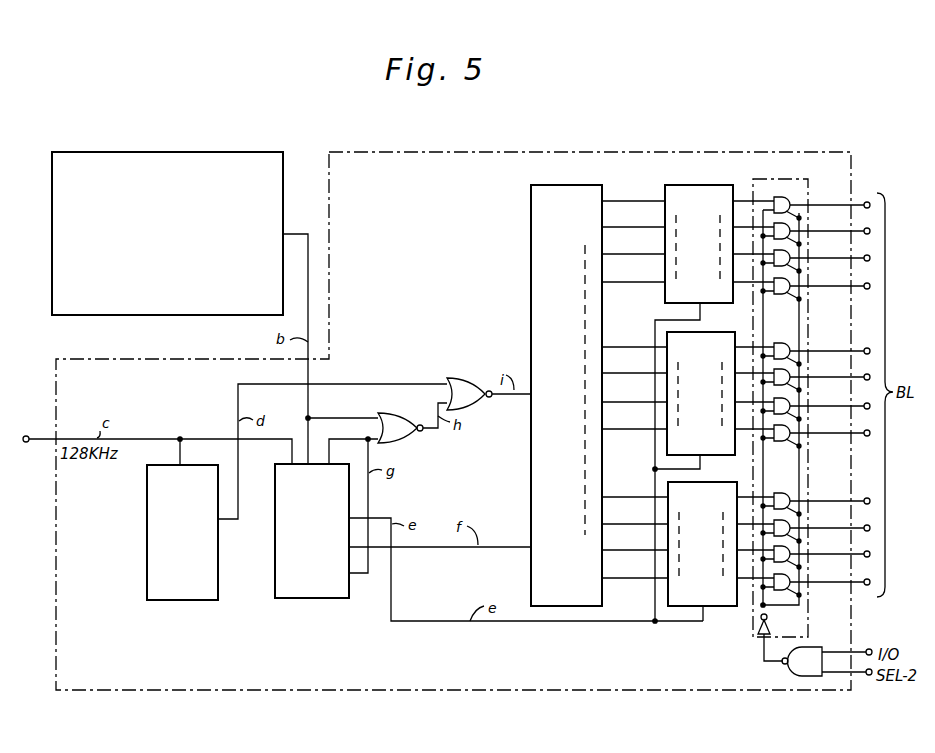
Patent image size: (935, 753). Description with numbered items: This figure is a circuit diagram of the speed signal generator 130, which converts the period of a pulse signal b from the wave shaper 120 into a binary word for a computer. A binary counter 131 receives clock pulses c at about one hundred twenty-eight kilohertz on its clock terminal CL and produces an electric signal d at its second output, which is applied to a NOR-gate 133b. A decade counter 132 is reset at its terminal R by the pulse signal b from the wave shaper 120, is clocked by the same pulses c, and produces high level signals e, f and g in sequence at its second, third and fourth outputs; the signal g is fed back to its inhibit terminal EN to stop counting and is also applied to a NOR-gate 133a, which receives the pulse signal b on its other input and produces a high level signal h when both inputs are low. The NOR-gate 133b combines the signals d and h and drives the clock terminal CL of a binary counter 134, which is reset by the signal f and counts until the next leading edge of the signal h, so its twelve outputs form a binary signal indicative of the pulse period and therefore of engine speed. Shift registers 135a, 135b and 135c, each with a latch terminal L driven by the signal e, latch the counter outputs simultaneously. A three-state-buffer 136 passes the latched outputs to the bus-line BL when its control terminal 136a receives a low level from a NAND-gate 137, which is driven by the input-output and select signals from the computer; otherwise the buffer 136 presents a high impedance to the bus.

The wave shaper 120 is at (236, 152).
The speed signal generator 130 is at (524, 153).
The binary counter 131 is at (178, 602).
The decade counter 132 is at (318, 600).
The NOR-gate 133a is at (400, 412).
The NOR-gate 133b is at (466, 378).
The binary counter 134 is at (558, 185).
The shift register 135a is at (707, 185).
The shift register 135b is at (706, 332).
The shift register 135c is at (705, 482).
The three-state-buffer 136 is at (786, 179).
The control terminal 136a is at (760, 644).
The NAND-gate 137 is at (782, 675).